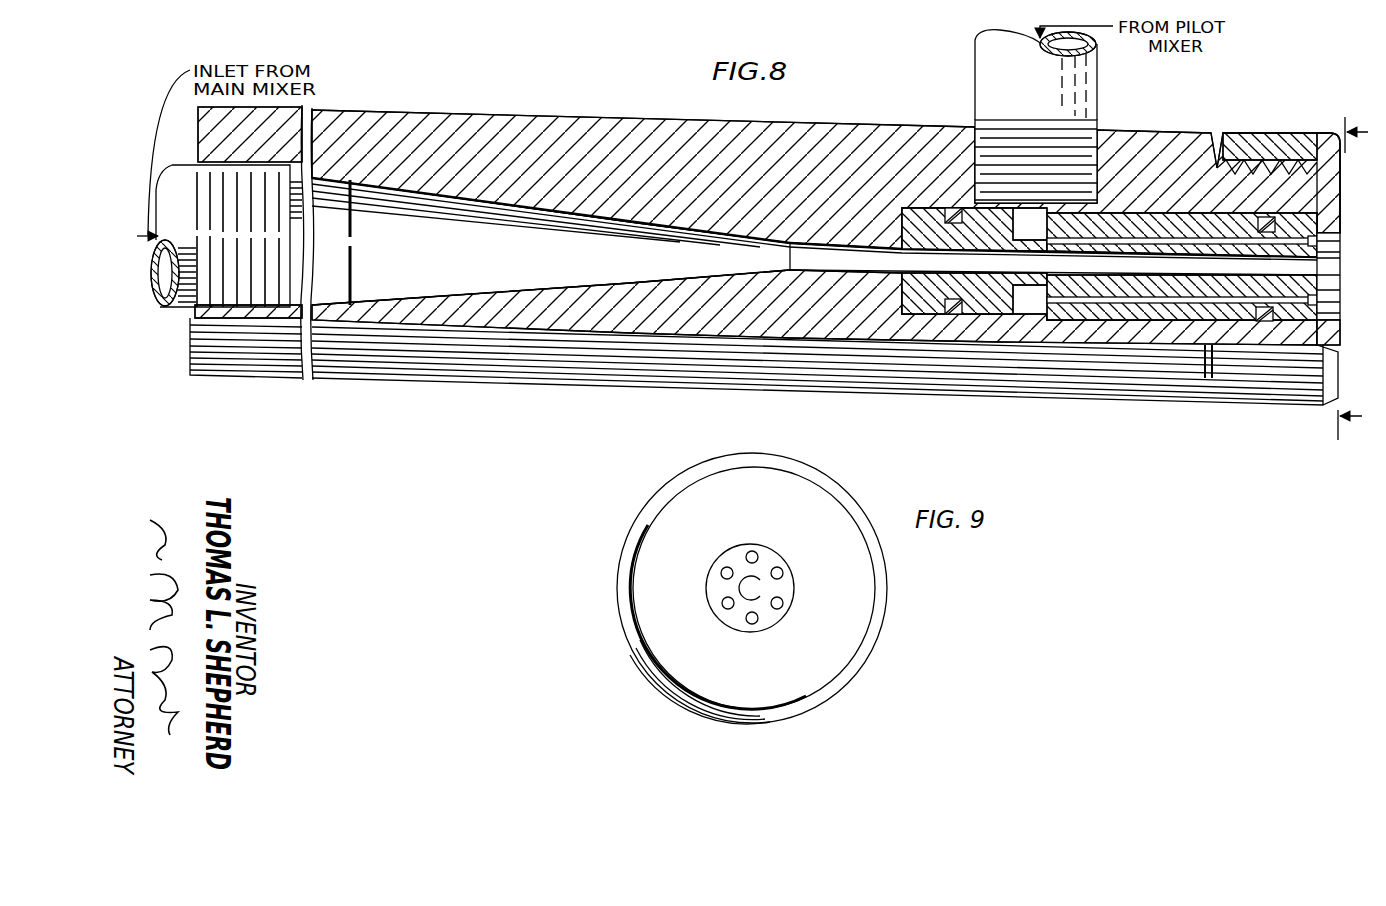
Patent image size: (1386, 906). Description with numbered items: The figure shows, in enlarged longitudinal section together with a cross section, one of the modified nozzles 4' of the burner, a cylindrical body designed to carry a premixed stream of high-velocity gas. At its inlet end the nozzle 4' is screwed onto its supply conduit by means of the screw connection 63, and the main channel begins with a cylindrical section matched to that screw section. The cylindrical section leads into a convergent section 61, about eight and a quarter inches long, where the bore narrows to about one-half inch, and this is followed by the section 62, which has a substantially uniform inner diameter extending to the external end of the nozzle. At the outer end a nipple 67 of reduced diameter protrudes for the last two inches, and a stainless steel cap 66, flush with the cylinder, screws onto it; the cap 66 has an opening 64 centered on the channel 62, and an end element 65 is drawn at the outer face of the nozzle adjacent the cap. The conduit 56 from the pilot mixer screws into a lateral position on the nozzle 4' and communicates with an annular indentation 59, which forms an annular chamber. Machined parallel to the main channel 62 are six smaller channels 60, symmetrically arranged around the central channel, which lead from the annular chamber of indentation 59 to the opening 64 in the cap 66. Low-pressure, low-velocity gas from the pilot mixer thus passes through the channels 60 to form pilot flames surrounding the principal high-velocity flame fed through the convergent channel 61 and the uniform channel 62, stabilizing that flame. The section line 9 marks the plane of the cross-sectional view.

In FIG. 8, the modified nozzle 4' is at (765, 244).
In FIG. 9, the modified nozzle 4' is at (771, 588).
In FIG. 8, the conduit 56 is at (1085, 97).
In FIG. 8, the annular indentation 59 is at (1022, 223).
In FIG. 8, the smaller channels 60 is at (1160, 215).
In FIG. 9, the smaller channels 60 is at (780, 576).
In FIG. 8, the convergent section 61 is at (449, 215).
In FIG. 8, the main channel section 62 is at (1318, 280).
In FIG. 9, the main channel section 62 is at (771, 556).
In FIG. 8, the screw connection 63 is at (237, 302).
In FIG. 8, the opening 64 is at (1320, 307).
In FIG. 8, the end plate 65 is at (1336, 234).
In FIG. 8, the cap 66 is at (1337, 133).
In FIG. 9, the cap 66 is at (840, 502).
In FIG. 8, the nipple 67 is at (1255, 190).
In FIG. 8, the section line 9- 9 is at (1355, 277).